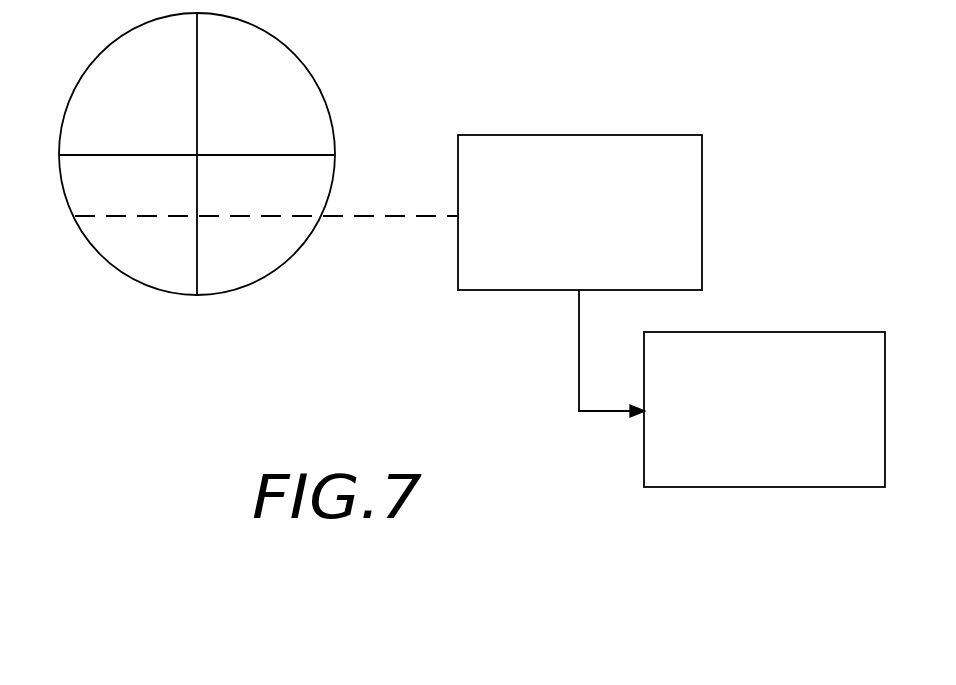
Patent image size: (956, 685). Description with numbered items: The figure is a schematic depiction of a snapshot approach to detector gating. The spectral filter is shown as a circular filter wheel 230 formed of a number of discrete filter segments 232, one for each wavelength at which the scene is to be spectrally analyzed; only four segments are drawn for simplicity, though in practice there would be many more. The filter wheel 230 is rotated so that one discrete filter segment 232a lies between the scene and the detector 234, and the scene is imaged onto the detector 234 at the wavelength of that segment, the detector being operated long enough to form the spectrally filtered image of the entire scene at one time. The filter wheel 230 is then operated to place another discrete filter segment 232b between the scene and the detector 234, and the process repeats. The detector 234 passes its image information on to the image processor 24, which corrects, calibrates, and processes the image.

The image processor 24 is at (827, 332).
The circular filter wheel 230 is at (187, 295).
The discrete filter segments 232 is at (297, 88).
The discrete filter segment 232a is at (270, 250).
The discrete filter segment 232b is at (117, 245).
The detector 234 is at (702, 175).